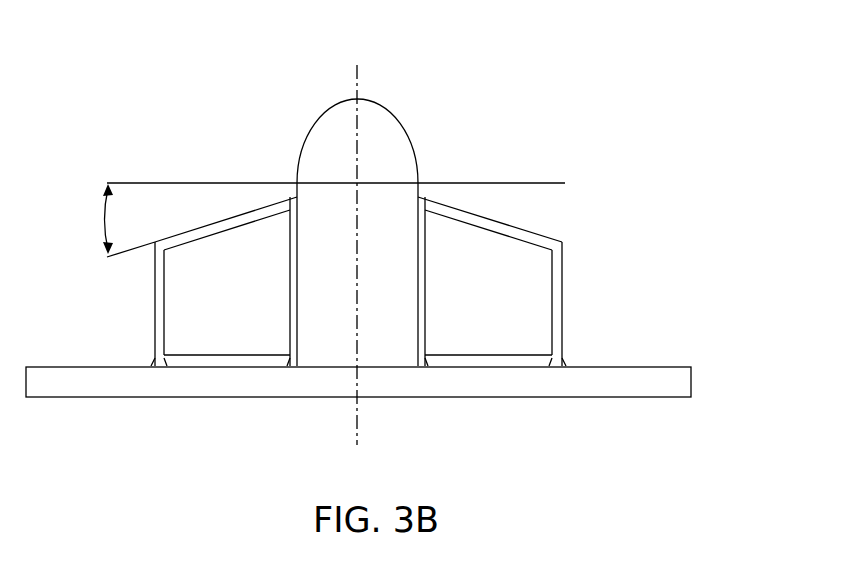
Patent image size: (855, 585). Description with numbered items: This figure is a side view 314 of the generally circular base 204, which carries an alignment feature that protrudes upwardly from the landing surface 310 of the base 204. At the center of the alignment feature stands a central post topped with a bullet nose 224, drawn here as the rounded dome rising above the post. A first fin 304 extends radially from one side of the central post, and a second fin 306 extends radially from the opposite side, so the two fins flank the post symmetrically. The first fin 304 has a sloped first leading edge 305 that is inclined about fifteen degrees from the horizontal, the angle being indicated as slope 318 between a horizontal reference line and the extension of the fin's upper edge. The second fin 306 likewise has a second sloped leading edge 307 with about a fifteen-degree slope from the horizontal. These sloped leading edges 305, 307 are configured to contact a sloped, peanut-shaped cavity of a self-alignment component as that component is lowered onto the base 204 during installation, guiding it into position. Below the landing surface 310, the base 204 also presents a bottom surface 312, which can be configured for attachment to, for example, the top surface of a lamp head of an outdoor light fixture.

The base 204 is at (692, 381).
The bullet nose 224 is at (385, 133).
The first fin 304 is at (207, 302).
The first leading edge 305 is at (226, 210).
The second fin 306 is at (498, 295).
The second sloped leading edge 307 is at (550, 226).
The landing surface 310 is at (634, 362).
The bottom surface 312 is at (587, 410).
The side view 314 is at (600, 38).
The slope 318 is at (103, 218).